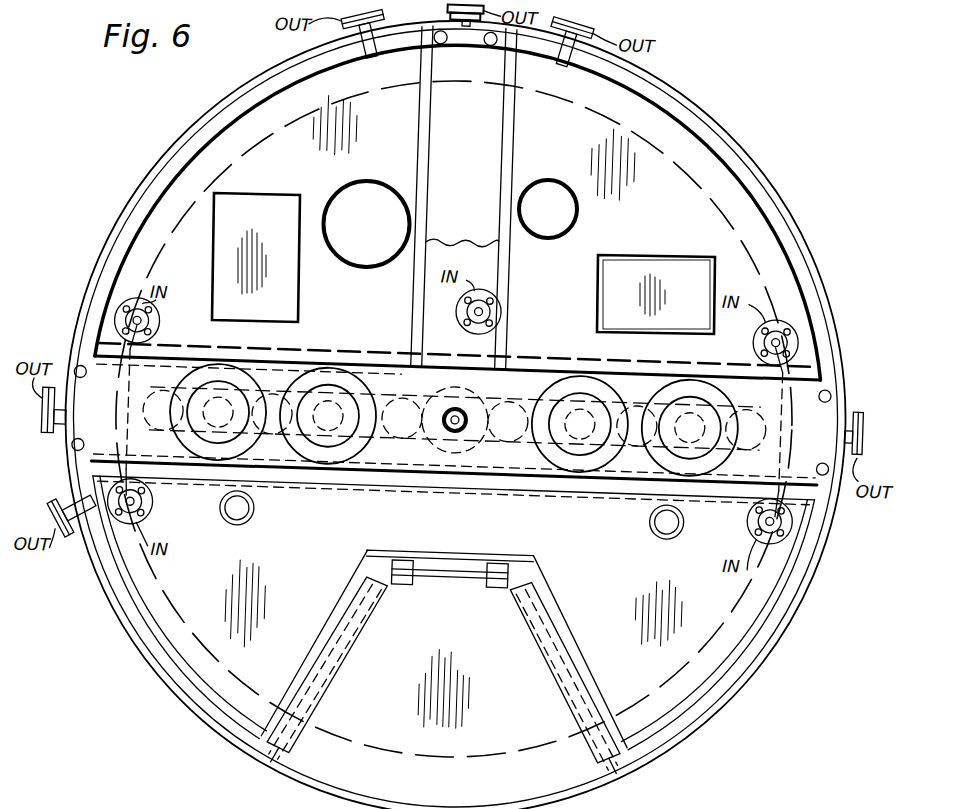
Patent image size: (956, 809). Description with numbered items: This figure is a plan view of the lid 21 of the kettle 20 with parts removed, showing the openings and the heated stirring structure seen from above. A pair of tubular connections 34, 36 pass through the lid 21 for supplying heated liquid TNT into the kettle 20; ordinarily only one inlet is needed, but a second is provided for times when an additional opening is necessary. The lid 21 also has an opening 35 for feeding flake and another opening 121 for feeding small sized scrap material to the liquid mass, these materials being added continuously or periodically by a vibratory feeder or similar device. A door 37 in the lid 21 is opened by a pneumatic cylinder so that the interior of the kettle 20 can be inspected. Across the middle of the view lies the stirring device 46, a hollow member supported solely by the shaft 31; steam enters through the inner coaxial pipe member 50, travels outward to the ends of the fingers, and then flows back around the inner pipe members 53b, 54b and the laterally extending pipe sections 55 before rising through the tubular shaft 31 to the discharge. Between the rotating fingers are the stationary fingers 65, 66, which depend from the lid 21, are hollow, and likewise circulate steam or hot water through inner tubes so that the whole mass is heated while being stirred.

The kettle 20 is at (571, 781).
The lid 21 is at (142, 651).
The shaft 31 is at (466, 410).
The tubular connection 34 is at (546, 180).
The opening 35 is at (660, 258).
The tubular connection 36 is at (367, 181).
The door 37 is at (476, 730).
The stirring device 46 is at (411, 445).
The inner coaxial pipe member 50 is at (445, 410).
The inner pipe member 53b is at (352, 355).
The inner pipe member 54b is at (400, 448).
The laterally extending pipe section 55 is at (167, 441).
The stationary finger 65 is at (315, 496).
The stationary finger 66 is at (229, 433).
The opening 121 is at (277, 203).